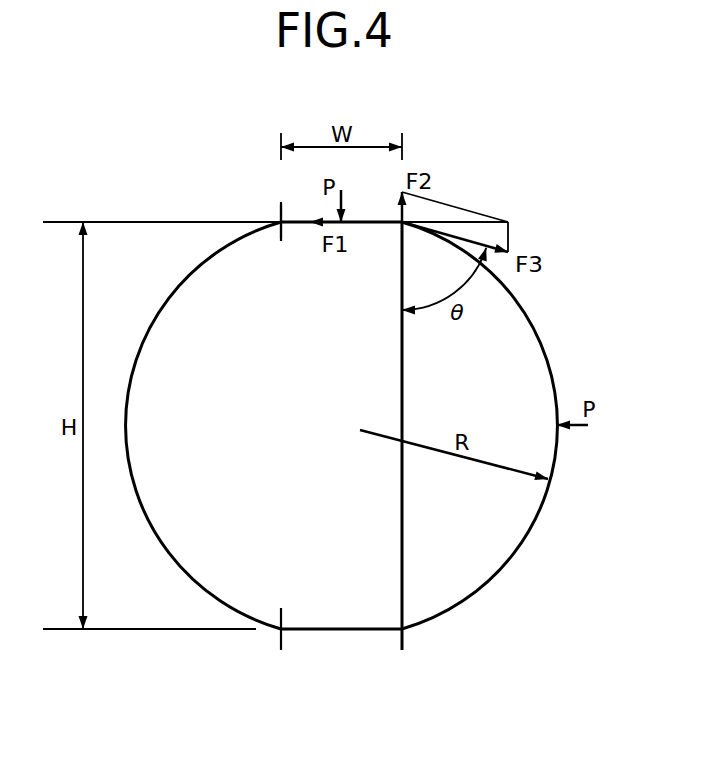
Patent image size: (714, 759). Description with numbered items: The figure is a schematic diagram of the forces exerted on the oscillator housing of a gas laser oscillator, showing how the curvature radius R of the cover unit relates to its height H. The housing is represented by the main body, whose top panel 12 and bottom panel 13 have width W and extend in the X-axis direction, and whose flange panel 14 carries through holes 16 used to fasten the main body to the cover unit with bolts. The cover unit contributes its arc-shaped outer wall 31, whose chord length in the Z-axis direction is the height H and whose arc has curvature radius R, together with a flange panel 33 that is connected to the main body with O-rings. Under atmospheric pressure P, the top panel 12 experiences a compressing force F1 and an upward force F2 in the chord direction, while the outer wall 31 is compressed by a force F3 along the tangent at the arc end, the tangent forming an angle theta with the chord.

The top panel 12 is at (297, 222).
The bottom panel 13 is at (358, 629).
The flange panel 14 is at (280, 222).
The flange panel 33 is at (238, 194).
The through holes 16 is at (402, 513).
The outer wall 31 is at (540, 512).